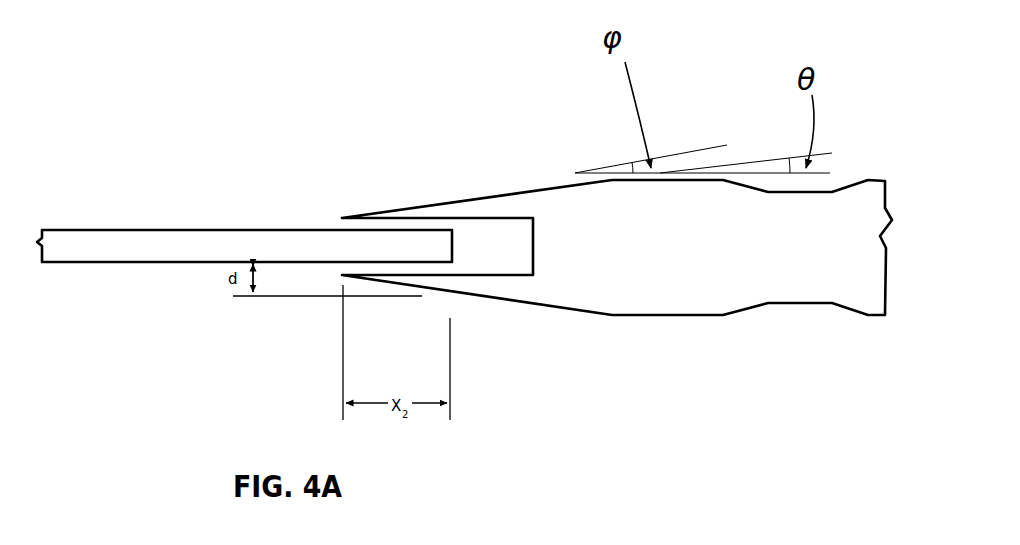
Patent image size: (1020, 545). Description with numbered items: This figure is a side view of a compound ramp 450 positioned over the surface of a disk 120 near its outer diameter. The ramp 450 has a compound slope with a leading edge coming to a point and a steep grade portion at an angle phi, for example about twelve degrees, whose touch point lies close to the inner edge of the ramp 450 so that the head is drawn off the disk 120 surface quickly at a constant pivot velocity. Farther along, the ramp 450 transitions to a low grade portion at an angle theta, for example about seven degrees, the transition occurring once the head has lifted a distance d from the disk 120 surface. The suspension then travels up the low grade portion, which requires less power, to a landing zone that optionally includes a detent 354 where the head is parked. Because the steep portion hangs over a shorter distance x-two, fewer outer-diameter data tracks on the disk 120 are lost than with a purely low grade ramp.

The disk 120 is at (88, 228).
The compound ramp 450 is at (372, 190).
The detent 354 is at (794, 314).